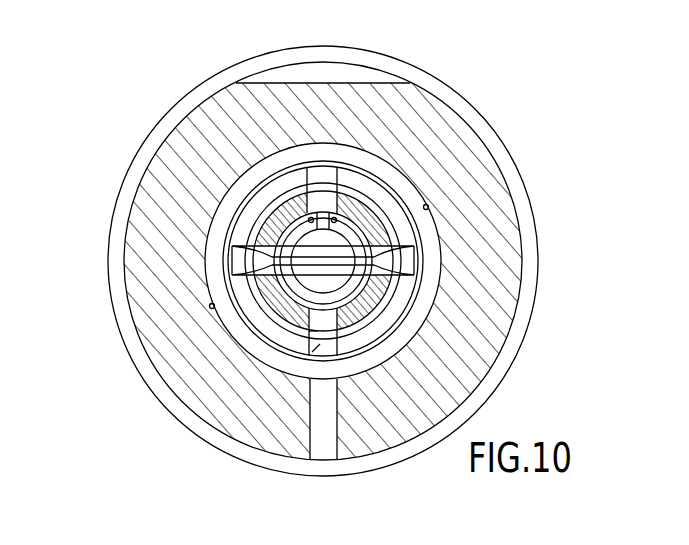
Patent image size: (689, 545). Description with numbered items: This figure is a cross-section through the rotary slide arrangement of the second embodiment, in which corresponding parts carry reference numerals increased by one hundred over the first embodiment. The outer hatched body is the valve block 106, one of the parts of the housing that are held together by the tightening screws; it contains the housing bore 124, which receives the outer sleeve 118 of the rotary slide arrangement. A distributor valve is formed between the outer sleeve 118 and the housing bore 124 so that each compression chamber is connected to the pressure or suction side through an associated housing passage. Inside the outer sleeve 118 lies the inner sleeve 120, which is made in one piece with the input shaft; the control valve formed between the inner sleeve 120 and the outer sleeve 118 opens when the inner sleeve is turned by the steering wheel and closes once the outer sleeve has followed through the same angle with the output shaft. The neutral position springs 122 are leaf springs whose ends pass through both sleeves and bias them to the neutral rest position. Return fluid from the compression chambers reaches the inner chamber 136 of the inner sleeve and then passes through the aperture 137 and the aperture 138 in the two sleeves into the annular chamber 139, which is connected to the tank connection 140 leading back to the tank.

The valve block 106 is at (484, 119).
The outer sleeve 118 is at (375, 180).
The inner sleeve 120 is at (377, 290).
The neutral position springs 122 is at (318, 318).
The housing bore 124 is at (392, 328).
The inner chamber of the inner sleeve 136 is at (262, 222).
The aperture in the inner sleeve 137 is at (309, 331).
The aperture in the outer sleeve 138 is at (430, 204).
The annular chamber 139 is at (210, 308).
The tank connection 140 is at (310, 447).